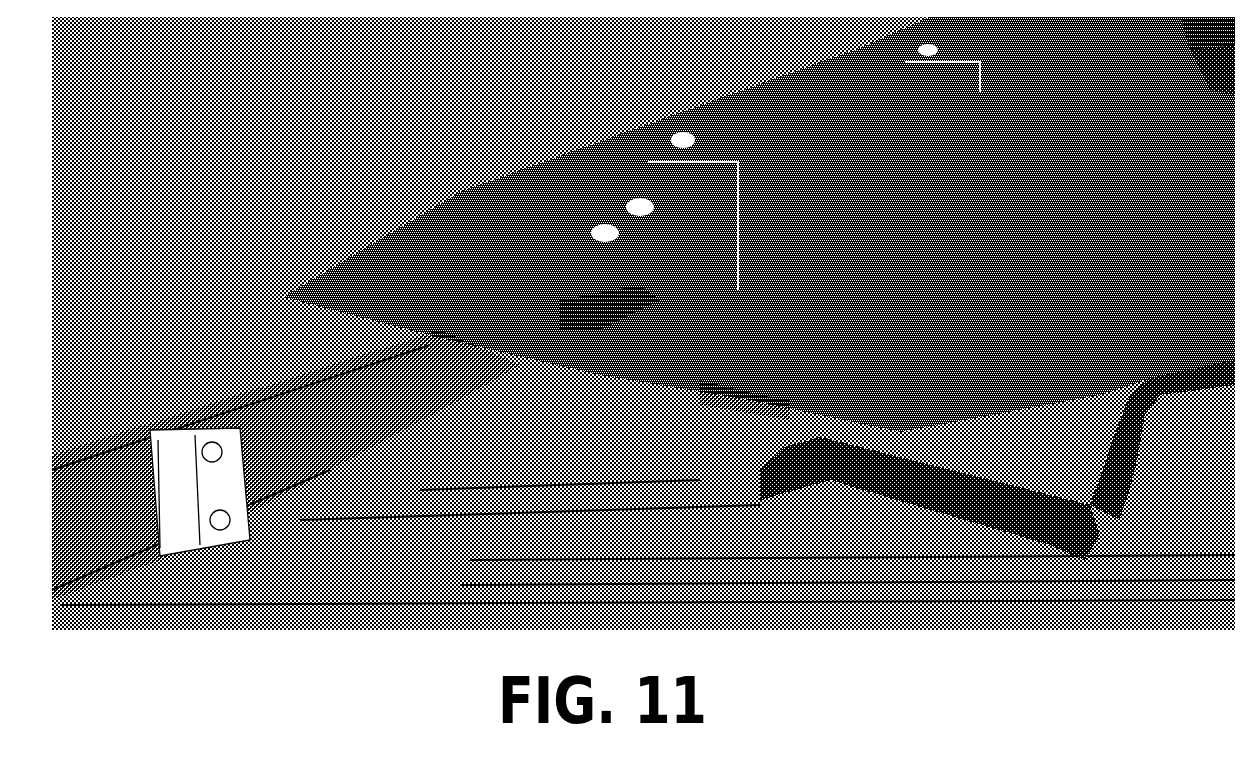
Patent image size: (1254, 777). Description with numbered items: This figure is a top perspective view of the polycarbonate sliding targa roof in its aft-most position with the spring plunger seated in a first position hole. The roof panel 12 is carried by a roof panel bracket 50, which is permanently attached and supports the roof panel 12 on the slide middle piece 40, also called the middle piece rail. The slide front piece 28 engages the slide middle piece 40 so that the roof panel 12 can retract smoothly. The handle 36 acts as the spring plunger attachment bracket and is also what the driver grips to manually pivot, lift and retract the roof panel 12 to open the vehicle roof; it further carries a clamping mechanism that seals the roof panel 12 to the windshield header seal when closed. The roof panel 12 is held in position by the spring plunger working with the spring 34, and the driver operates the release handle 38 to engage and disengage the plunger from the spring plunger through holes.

The roof panel 12 is at (490, 228).
The slide front piece 28 is at (90, 458).
The spring 34 is at (613, 293).
The handle 36 is at (740, 383).
The release handle 38 is at (860, 316).
The slide middle piece 40 is at (365, 445).
The roof panel bracket 50 is at (742, 158).